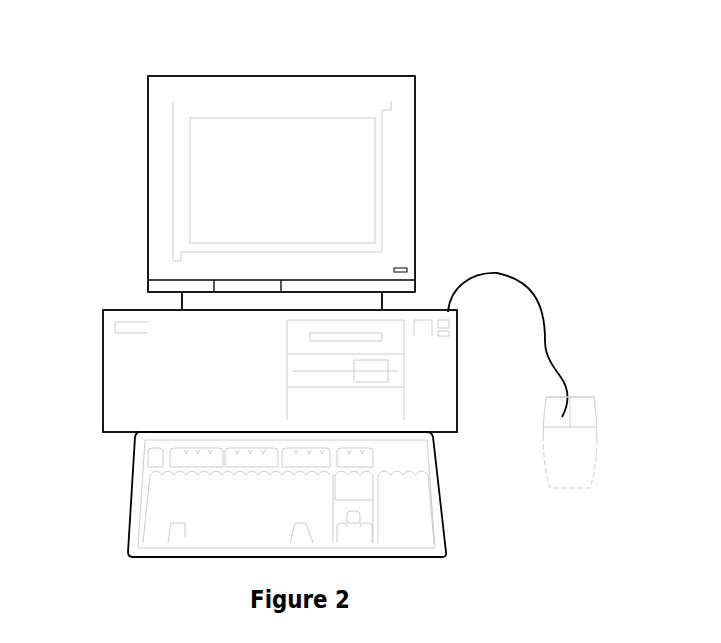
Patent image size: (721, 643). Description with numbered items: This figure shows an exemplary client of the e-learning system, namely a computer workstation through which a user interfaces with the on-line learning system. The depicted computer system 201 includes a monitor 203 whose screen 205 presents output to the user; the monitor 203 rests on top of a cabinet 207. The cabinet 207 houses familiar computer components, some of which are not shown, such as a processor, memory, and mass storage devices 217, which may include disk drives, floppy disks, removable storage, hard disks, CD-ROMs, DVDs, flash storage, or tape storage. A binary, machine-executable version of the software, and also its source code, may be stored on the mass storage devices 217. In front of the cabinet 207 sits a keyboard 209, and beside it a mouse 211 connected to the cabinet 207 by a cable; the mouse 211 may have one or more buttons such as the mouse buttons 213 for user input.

The computer system 201 is at (437, 50).
The monitor 203 is at (415, 157).
The screen 205 is at (205, 172).
The cabinet 207 is at (128, 313).
The keyboard 209 is at (172, 557).
The mouse 211 is at (570, 477).
The mouse buttons 213 is at (580, 413).
The mass storage devices 217 is at (397, 325).